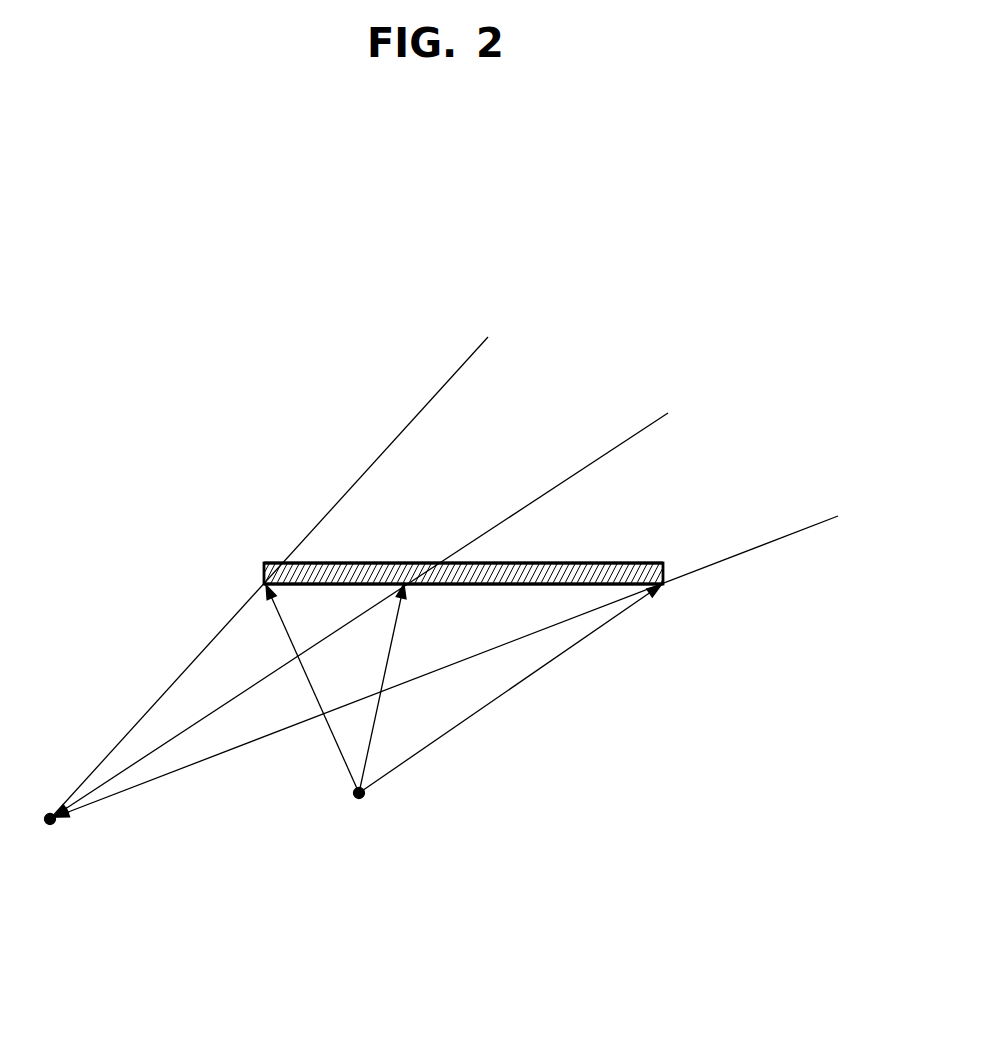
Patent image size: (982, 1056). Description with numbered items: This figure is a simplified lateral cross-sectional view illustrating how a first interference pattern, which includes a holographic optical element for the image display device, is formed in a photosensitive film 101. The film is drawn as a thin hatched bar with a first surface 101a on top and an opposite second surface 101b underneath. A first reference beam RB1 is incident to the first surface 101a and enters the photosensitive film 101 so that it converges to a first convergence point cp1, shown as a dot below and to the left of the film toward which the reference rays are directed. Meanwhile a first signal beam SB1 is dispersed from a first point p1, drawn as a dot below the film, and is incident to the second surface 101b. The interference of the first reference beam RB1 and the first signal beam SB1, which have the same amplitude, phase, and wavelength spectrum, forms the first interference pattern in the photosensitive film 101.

The photosensitive film 101 is at (263, 574).
The first surface 101a is at (631, 563).
The second surface 101b is at (607, 584).
The first reference beam RB1 is at (778, 538).
The first signal beam SB1 is at (344, 760).
The first convergence point cp1 is at (50, 824).
The first point p1 is at (358, 799).